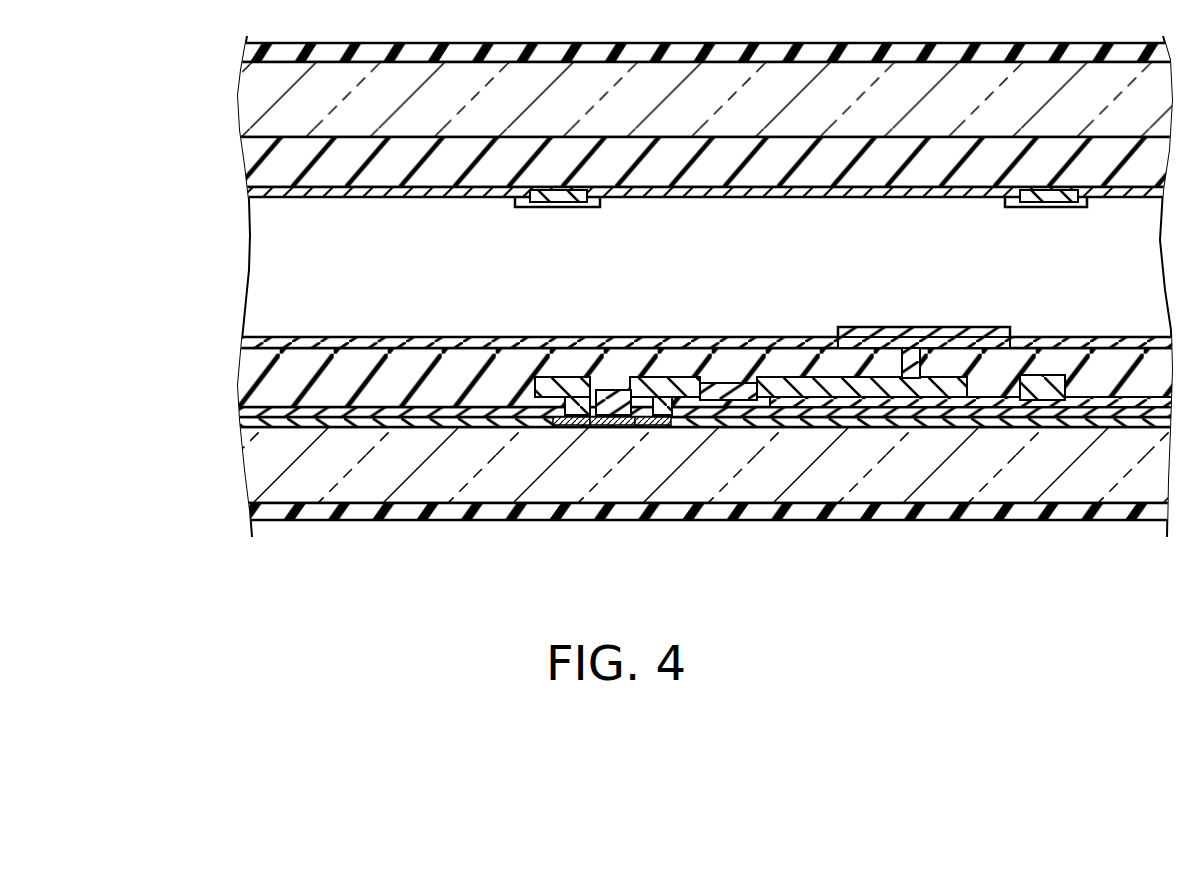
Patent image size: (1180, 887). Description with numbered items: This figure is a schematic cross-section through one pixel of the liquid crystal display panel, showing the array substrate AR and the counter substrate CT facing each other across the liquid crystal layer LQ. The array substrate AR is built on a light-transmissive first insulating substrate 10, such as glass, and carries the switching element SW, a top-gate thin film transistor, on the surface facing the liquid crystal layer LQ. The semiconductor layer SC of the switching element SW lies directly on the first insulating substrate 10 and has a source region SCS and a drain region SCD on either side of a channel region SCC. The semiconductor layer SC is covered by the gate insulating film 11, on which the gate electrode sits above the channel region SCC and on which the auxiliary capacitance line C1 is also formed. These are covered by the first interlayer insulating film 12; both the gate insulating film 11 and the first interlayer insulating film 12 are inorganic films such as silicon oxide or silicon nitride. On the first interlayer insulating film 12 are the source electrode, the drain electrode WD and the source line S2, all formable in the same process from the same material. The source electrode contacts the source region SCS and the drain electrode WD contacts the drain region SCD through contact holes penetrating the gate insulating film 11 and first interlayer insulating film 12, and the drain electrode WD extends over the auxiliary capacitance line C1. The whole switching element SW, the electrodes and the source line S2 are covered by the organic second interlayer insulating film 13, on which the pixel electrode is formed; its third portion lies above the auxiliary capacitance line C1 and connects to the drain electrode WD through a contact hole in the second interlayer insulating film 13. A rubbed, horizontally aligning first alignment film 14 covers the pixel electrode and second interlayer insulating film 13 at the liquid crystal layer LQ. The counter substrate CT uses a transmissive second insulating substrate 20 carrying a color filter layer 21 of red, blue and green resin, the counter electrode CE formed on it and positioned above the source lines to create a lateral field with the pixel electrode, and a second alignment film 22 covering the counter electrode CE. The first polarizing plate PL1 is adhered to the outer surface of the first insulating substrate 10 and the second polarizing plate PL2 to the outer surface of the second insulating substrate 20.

The second polarizing plate PL2 is at (262, 47).
The counter substrate CT is at (250, 92).
The second insulating substrate 20 is at (256, 118).
The color filter layer 21 is at (252, 157).
The second alignment film 22 is at (256, 192).
The counter electrode CE is at (563, 203).
The liquid crystal layer LQ is at (256, 272).
The first alignment film 14 is at (258, 343).
The second interlayer insulating film 13 is at (260, 362).
The first interlayer insulating film 12 is at (258, 411).
The gate insulating film 11 is at (252, 423).
The first insulating substrate 10 is at (260, 463).
The array substrate AR is at (250, 491).
The first polarizing plate PL1 is at (267, 513).
The drain electrode WD is at (657, 378).
The source region SCS is at (573, 423).
The channel region SCC is at (607, 423).
The drain region SCD is at (641, 423).
The semiconductor layer SC is at (605, 510).
The switching element SW is at (611, 440).
The auxiliary capacitance line C1 is at (853, 430).
The source line S2 is at (1043, 388).